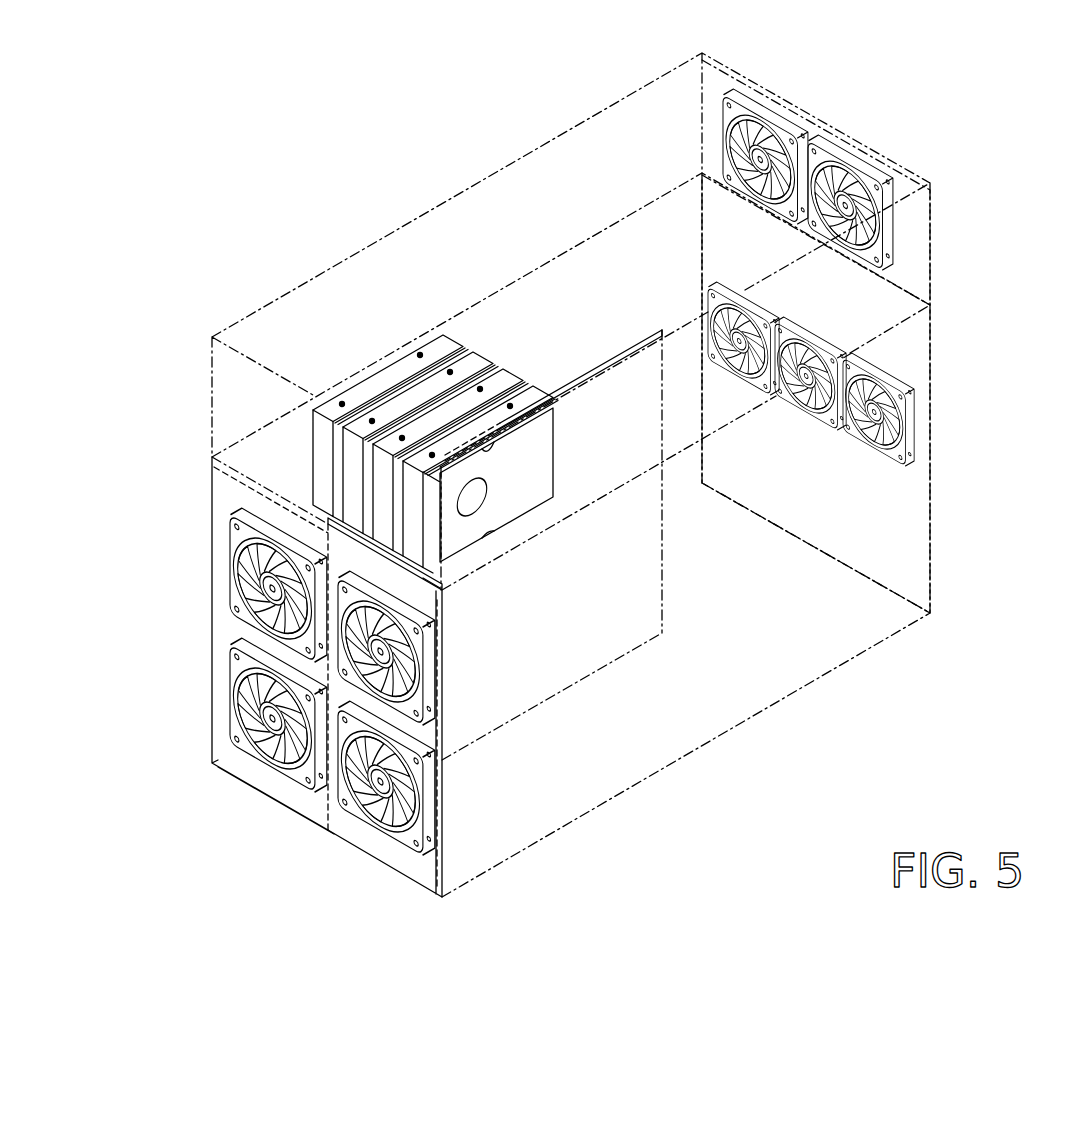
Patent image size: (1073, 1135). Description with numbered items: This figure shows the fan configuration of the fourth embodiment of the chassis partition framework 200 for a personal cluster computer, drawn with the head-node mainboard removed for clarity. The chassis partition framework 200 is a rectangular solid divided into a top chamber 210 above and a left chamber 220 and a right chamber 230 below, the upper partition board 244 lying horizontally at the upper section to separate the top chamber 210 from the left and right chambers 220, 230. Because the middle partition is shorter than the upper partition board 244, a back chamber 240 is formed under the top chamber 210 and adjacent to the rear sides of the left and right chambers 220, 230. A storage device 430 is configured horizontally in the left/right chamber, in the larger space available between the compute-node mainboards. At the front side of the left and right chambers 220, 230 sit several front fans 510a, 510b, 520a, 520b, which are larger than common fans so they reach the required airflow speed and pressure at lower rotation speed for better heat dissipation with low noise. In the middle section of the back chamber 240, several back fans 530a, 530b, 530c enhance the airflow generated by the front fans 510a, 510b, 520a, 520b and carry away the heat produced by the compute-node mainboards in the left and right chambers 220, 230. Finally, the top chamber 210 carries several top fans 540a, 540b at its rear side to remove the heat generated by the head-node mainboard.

The chassis partition framework 200 is at (917, 705).
The top chamber 210 is at (610, 165).
The left chamber 220 is at (260, 767).
The right chamber 230 is at (386, 845).
The back chamber 240 is at (902, 516).
The upper partition board 244 is at (888, 287).
The storage device 430 is at (520, 490).
The front fan 510a is at (236, 578).
The front fan 510b is at (242, 702).
The front fan 520a is at (395, 668).
The front fan 520b is at (392, 784).
The back fan 530a is at (750, 330).
The back fan 530b is at (800, 355).
The back fan 530c is at (915, 445).
The top fan 540a is at (765, 125).
The top fan 540b is at (865, 195).